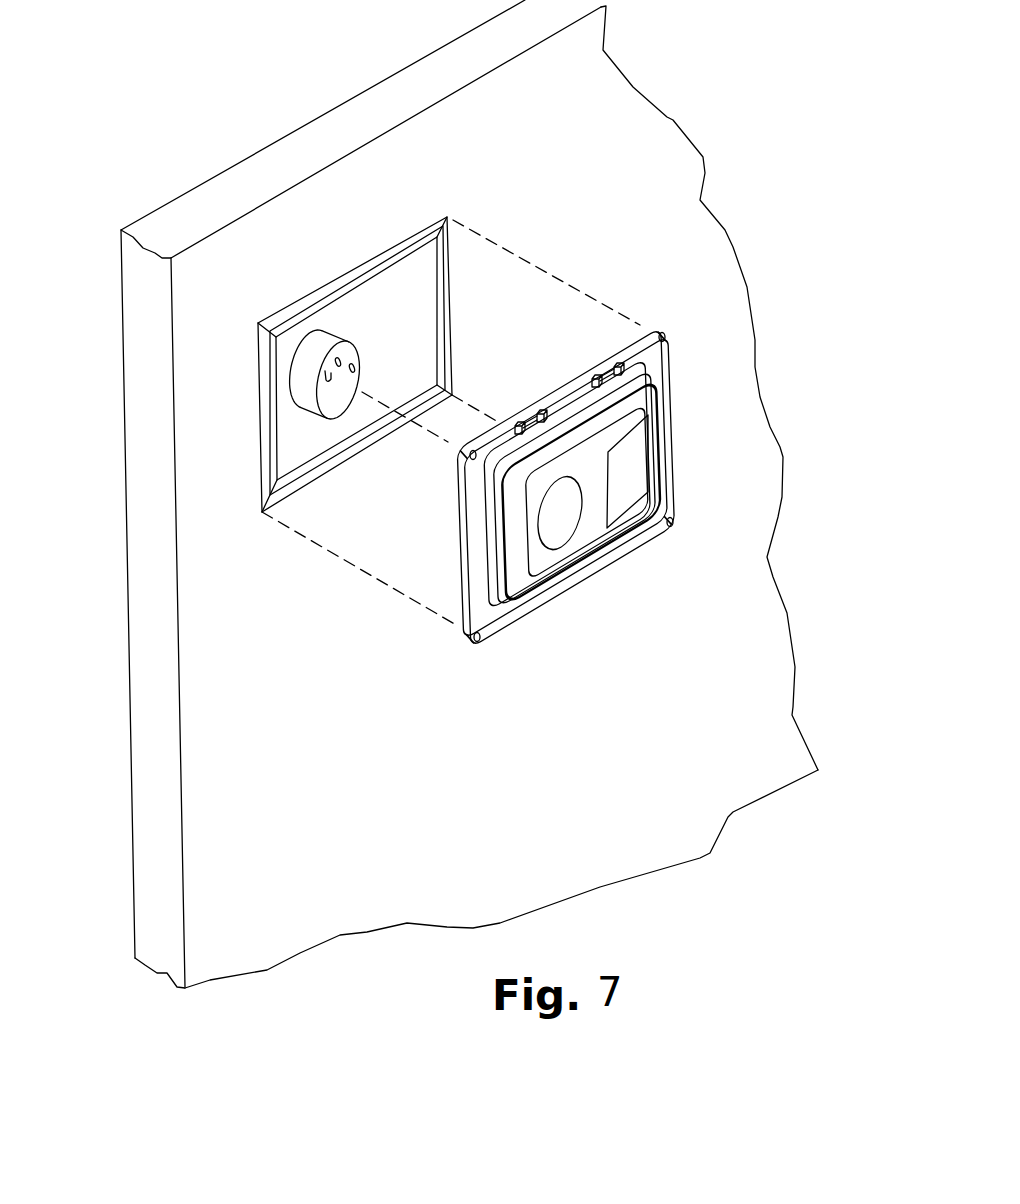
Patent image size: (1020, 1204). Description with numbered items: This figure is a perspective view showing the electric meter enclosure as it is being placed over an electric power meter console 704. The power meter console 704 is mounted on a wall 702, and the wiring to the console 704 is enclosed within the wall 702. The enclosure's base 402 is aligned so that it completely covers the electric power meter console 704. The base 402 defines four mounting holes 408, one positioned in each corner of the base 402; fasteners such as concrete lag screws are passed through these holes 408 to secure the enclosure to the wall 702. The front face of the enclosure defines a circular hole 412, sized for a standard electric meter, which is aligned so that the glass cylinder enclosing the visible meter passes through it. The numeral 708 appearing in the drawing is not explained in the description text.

The wall 702 is at (200, 315).
The electric power meter console 704 is at (414, 236).
The electrical outlet socket 708 is at (305, 388).
The base 402 is at (671, 360).
The mounting holes 408 is at (664, 335).
The circular hole 412 is at (560, 530).